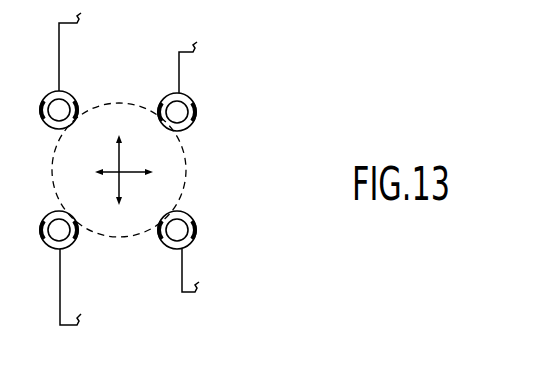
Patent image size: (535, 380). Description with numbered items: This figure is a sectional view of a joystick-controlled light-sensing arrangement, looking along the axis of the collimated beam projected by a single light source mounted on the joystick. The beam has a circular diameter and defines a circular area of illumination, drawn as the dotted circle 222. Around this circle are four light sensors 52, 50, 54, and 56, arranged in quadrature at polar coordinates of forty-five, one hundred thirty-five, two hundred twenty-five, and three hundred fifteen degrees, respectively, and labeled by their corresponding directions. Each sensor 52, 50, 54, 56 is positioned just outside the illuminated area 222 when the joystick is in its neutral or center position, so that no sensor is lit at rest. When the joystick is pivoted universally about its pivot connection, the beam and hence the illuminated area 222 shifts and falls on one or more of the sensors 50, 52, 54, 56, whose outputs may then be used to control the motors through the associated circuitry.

The light sensor 50 is at (101, 87).
The light sensor 52 is at (195, 111).
The light sensor 54 is at (63, 249).
The light sensor 56 is at (191, 245).
The illuminated area 222 is at (184, 185).